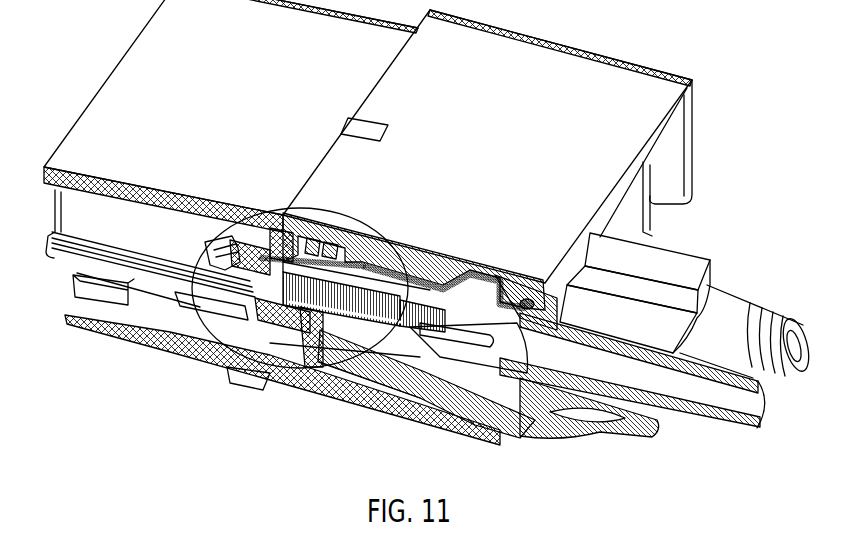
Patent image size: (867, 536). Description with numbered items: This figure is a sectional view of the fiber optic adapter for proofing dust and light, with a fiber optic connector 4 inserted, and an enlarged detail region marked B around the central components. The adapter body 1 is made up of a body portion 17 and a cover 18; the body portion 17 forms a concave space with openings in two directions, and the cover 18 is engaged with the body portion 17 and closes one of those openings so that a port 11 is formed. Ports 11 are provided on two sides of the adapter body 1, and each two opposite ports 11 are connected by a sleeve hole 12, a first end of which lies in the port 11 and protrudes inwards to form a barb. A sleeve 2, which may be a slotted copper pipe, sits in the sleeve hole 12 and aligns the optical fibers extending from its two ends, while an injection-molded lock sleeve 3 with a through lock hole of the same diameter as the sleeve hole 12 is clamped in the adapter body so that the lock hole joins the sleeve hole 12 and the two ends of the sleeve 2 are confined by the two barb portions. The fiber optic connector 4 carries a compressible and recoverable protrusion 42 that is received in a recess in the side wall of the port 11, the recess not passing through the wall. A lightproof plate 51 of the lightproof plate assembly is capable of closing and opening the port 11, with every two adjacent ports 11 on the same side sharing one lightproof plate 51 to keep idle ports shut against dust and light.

The adapter body 1 is at (192, 392).
The sleeve 2 is at (250, 228).
The lock sleeve 3 is at (365, 262).
The fiber optic connector 4 is at (672, 258).
The port 11 is at (676, 158).
The sleeve hole 12 is at (218, 262).
The body portion 17 is at (338, 398).
The cover 18 is at (665, 80).
The protrusion 42 is at (447, 400).
The lightproof plate 51 is at (283, 277).
The detail region B is at (370, 227).